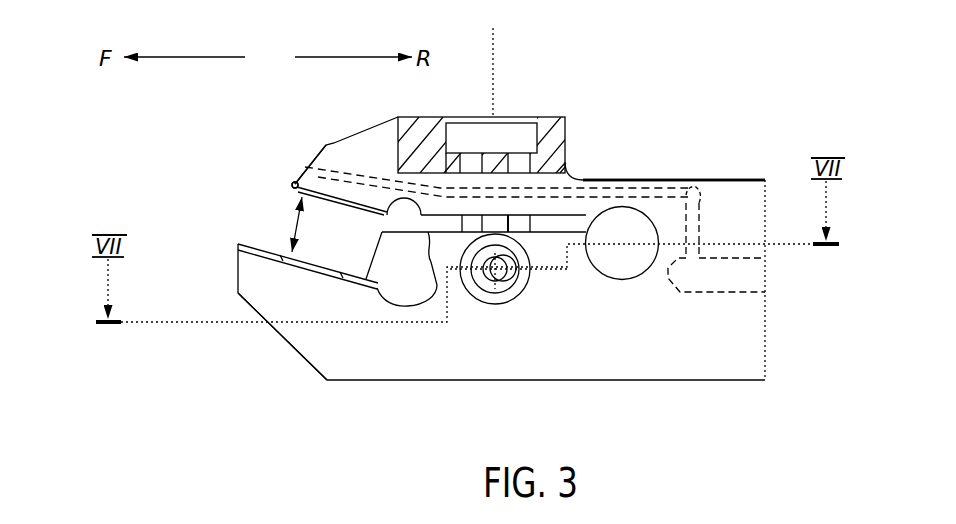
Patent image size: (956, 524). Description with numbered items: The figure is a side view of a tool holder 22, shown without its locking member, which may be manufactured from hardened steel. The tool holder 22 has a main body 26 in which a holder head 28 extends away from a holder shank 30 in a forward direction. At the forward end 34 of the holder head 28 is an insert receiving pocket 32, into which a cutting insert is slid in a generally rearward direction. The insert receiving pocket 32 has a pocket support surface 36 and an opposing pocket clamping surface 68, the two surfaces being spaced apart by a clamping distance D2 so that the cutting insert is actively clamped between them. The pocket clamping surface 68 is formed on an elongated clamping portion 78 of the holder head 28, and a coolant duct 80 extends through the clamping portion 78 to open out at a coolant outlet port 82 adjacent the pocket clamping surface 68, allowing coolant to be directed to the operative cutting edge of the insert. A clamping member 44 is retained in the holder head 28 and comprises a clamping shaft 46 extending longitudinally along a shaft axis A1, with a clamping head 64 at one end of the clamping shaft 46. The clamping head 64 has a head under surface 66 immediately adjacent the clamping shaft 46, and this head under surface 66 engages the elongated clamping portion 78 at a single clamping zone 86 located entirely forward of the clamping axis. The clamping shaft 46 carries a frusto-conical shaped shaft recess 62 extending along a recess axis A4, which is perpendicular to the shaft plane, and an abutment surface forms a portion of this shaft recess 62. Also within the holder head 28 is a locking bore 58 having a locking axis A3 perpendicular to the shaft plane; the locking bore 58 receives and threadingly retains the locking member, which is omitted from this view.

The tool holder 22 is at (676, 104).
The main body 26 is at (600, 318).
The holder head 28 is at (388, 350).
The holder shank 30 is at (718, 340).
The insert receiving pocket 32 is at (280, 219).
The forward end 34 is at (237, 265).
The pocket support surface 36 is at (263, 245).
The clamping member 44 is at (489, 130).
The clamping shaft 46 is at (505, 225).
The locking bore 58 is at (505, 296).
The shaft recess 62 is at (486, 284).
The clamping head 64 is at (505, 130).
The head under surface 66 is at (513, 171).
The pocket clamping surface 68 is at (292, 190).
The elongated clamping portion 78 is at (443, 174).
The coolant duct 80 is at (370, 177).
The coolant outlet port 82 is at (313, 166).
The single clamping zone 86 is at (452, 148).
The shaft axis A1 is at (494, 60).
The locking axis A3 is at (508, 278).
The recess axis A4 is at (500, 264).
The clamping distance D2 is at (315, 224).